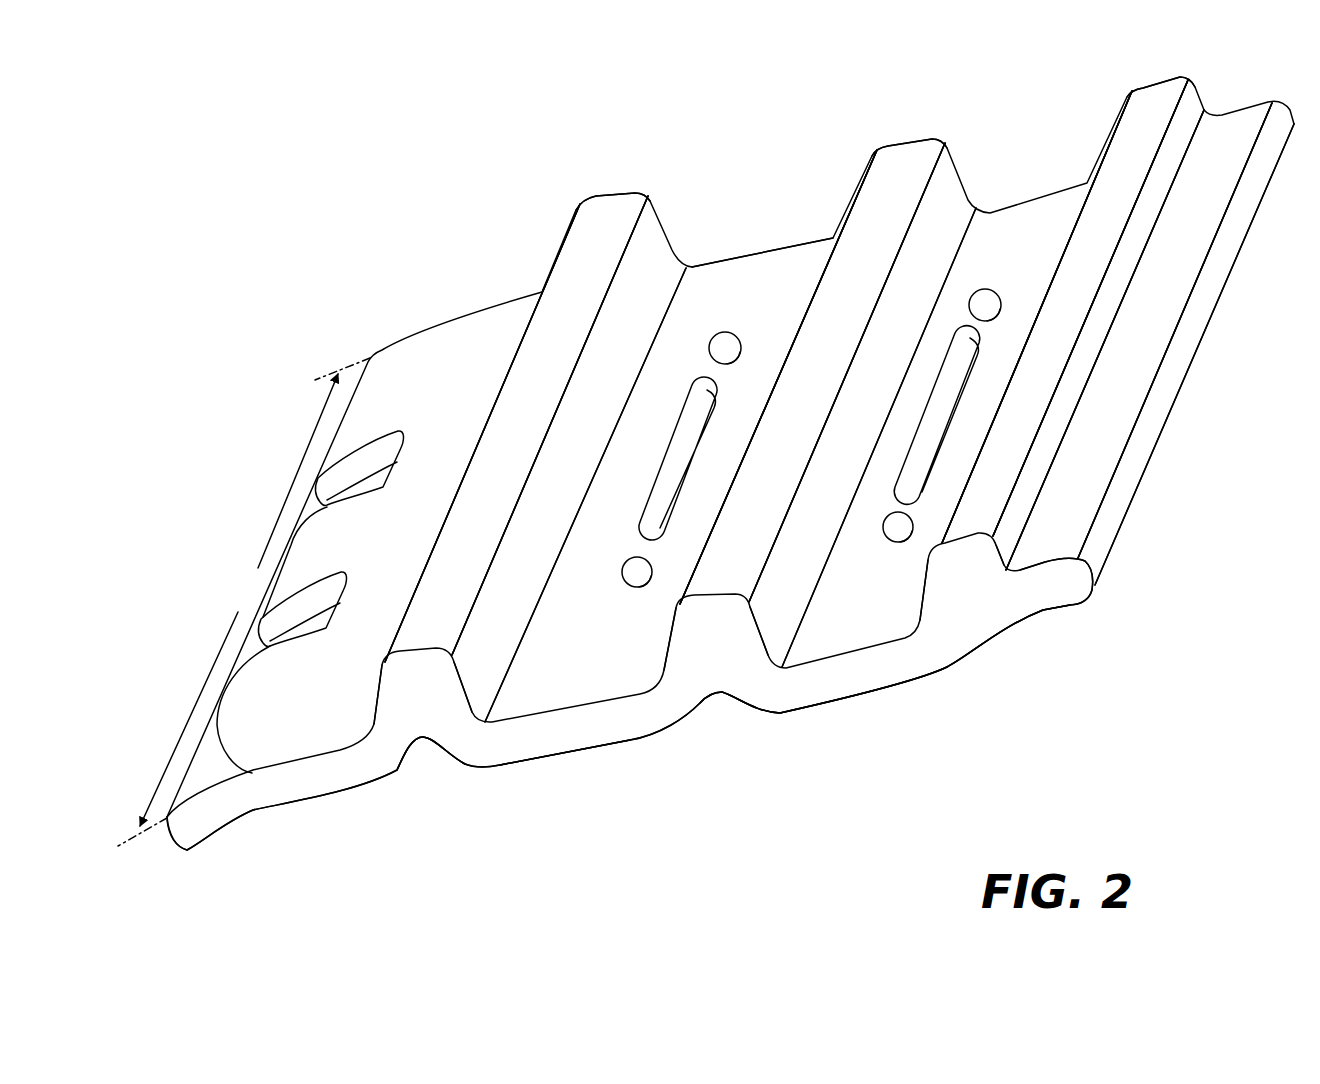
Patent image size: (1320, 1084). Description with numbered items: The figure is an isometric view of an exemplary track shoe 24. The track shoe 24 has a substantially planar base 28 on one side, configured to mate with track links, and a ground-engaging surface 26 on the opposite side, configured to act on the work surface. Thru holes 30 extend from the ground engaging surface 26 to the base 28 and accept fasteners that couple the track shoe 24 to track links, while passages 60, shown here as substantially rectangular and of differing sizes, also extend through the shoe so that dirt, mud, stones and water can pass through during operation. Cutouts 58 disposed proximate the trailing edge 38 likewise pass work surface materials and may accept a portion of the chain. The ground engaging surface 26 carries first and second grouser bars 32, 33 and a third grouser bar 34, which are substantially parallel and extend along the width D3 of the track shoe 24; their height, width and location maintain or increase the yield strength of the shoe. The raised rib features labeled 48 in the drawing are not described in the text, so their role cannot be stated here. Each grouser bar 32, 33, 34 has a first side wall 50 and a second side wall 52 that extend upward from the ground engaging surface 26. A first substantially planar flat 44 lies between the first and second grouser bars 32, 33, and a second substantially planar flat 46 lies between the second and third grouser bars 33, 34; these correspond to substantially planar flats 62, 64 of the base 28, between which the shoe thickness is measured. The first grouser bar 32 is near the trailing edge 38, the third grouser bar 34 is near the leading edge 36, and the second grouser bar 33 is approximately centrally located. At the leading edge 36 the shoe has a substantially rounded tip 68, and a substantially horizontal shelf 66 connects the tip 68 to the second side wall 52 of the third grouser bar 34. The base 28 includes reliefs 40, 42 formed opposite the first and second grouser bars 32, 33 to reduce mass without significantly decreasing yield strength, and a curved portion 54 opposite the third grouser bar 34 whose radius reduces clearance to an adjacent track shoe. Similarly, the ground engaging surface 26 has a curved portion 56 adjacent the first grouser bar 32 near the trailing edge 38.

The track shoe 24 is at (407, 276).
The ground-engaging surface 26 is at (757, 240).
The base 28 is at (530, 774).
The thru hole 30 is at (722, 336).
The first grouser bar 32 is at (499, 592).
The second grouser bar 33 is at (774, 574).
The third grouser bar 34 is at (1060, 400).
The leading edge 36 is at (1062, 612).
The trailing edge 38 is at (171, 854).
The first relief 40 is at (427, 753).
The second relief 42 is at (728, 706).
The first substantially planar flat 44 is at (572, 686).
The second substantially planar flat 46 is at (835, 624).
The rib 48 is at (612, 193).
The first side wall 50 is at (378, 688).
The second side wall 52 is at (463, 692).
The curved portion 54 is at (1000, 630).
The curved portion 56 is at (218, 710).
The cutout 58 is at (318, 506).
The passage 60 is at (713, 423).
The substantially planar flat 62 is at (593, 746).
The substantially planar flat 64 is at (857, 694).
The shelf 66 is at (1112, 418).
The rounded tip 68 is at (1109, 530).
The width D3 is at (239, 600).